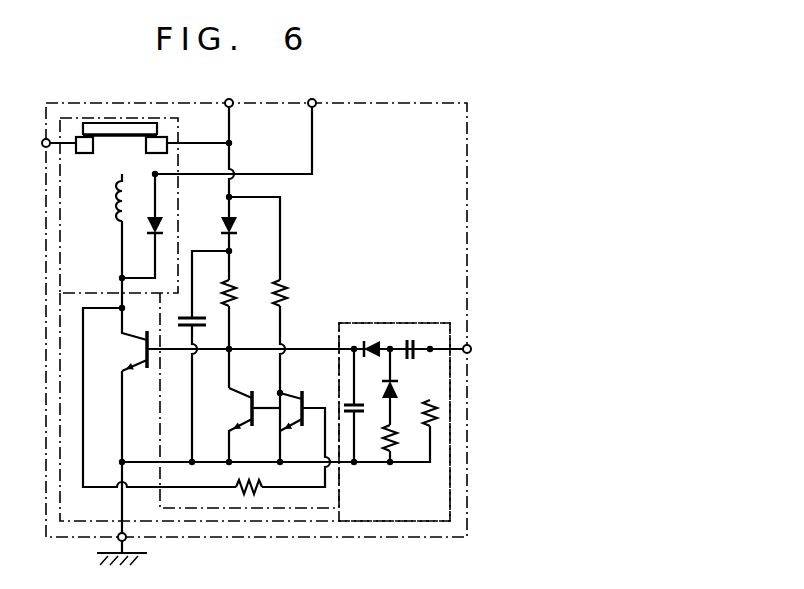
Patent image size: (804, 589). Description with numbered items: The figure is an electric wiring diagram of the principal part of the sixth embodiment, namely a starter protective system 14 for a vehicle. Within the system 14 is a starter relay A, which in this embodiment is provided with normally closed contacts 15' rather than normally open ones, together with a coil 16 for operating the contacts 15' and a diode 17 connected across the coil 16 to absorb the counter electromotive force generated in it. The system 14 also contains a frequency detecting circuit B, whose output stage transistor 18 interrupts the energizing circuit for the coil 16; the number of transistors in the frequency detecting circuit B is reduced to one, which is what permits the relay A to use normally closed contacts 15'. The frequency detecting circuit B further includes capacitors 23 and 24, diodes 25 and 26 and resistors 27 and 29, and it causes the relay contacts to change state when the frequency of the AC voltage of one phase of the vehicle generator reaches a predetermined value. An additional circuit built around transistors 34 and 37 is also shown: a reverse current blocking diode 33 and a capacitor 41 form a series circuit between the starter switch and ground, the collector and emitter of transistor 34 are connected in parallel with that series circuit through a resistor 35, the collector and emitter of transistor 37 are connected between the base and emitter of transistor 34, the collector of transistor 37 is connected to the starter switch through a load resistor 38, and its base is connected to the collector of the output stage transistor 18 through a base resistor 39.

The starter protective system 14 is at (386, 103).
The starter relay A is at (87, 117).
The frequency detecting circuit B is at (452, 456).
The normally closed contacts 15' is at (121, 114).
The coil 16 is at (116, 205).
The diode 17 is at (165, 228).
The output stage transistor 18 is at (131, 351).
The reverse current blocking diode 33 is at (237, 226).
The resistor 35 is at (236, 290).
The load resistor 38 is at (288, 290).
The capacitor 41 is at (208, 320).
The transistor 34 is at (236, 394).
The transistor 37 is at (299, 419).
The base resistor 39 is at (251, 485).
The capacitor 23 is at (346, 398).
The diode 25 is at (372, 340).
The capacitor 24 is at (420, 338).
The diode 26 is at (398, 396).
The resistor 27 is at (392, 428).
The resistor 29 is at (440, 412).